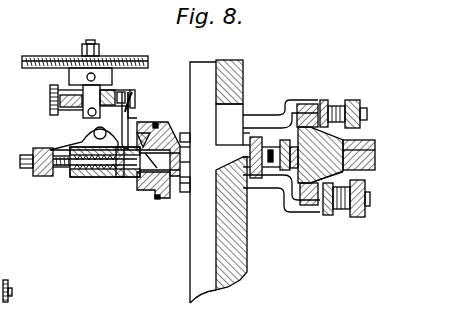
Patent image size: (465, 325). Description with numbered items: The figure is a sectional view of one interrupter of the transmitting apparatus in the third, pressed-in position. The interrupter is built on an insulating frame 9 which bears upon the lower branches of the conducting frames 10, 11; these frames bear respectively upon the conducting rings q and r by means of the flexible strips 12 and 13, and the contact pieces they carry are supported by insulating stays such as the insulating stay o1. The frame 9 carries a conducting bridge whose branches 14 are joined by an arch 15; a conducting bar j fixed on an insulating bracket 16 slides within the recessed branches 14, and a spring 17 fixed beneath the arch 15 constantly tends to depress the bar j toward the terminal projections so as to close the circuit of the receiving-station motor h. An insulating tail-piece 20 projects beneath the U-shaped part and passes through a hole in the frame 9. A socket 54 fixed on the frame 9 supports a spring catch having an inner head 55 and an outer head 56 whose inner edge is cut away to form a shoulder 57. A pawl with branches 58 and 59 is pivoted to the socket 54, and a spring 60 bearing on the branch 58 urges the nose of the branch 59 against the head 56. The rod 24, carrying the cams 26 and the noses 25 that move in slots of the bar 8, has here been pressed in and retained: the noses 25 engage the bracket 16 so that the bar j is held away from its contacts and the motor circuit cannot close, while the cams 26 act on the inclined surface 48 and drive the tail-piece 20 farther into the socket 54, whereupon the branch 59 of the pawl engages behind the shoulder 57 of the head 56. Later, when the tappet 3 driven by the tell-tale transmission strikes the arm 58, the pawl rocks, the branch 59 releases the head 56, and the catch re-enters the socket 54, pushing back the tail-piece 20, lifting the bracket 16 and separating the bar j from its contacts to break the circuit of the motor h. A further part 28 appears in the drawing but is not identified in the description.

The tappet 3 is at (118, 93).
The branch of pawl 58 is at (130, 104).
The branch of pawl 59 is at (82, 140).
The spring 60 is at (137, 114).
The conducting frame 10 is at (153, 125).
The inclined surface 48 is at (181, 140).
The nose 25 is at (225, 144).
The cam 26 is at (181, 160).
The insulating bracket 16 is at (218, 185).
The branch of conducting bridge 14 is at (270, 172).
The arch of conducting bridge 15 is at (288, 180).
The spring 17 is at (277, 116).
The conducting bar j is at (268, 148).
The conducting ring q is at (308, 108).
The flexible strip 12 is at (323, 100).
The motor h is at (376, 146).
The sleeve 28 is at (346, 176).
The conducting ring r is at (310, 215).
The flexible strip 13 is at (333, 207).
The outer head of spring catch 56 is at (46, 178).
The shoulder 57 is at (54, 178).
The socket 54 is at (101, 173).
The inner head of spring catch 55 is at (121, 178).
The insulating tail-piece 20 is at (133, 176).
The insulating frame 9 is at (155, 186).
The conducting frame 11 is at (158, 200).
The rod 24 is at (198, 266).
The bar 8 is at (235, 255).
The insulating stay o1 is at (0, 262).